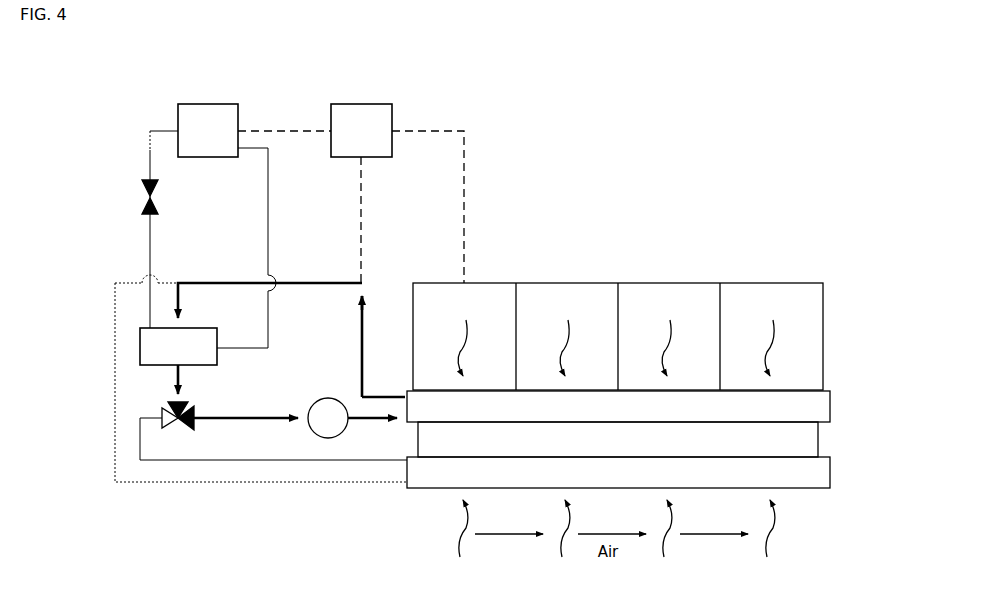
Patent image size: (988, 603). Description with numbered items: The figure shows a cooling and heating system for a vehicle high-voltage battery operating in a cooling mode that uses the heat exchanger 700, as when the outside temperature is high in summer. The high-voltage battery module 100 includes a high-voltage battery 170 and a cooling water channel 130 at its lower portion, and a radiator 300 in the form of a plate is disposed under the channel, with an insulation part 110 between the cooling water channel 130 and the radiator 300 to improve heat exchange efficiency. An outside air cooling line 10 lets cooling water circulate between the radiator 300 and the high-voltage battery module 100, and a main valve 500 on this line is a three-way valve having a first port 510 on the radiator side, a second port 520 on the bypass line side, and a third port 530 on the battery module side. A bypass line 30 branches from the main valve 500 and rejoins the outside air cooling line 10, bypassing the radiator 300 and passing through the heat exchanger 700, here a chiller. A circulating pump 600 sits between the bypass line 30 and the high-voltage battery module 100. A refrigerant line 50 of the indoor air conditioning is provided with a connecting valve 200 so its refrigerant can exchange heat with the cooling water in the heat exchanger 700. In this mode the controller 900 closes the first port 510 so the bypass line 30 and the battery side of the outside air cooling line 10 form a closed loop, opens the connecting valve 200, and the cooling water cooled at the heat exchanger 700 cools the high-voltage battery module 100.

The outside air cooling line 10 is at (115, 340).
The bypass line 30 is at (180, 300).
The refrigerant line 50 is at (209, 104).
The high-voltage battery module 100 is at (618, 293).
The insulation part 110 is at (806, 437).
The cooling water channel 130 is at (815, 408).
The high-voltage battery 170 is at (562, 280).
The connecting valve 200 is at (142, 198).
The radiator 300 is at (814, 470).
The main valve 500 is at (226, 466).
The first port 510 is at (163, 416).
The second port 520 is at (192, 408).
The third port 530 is at (194, 426).
The circulating pump 600 is at (325, 397).
The heat exchanger 700 is at (218, 355).
The controller 900 is at (362, 104).